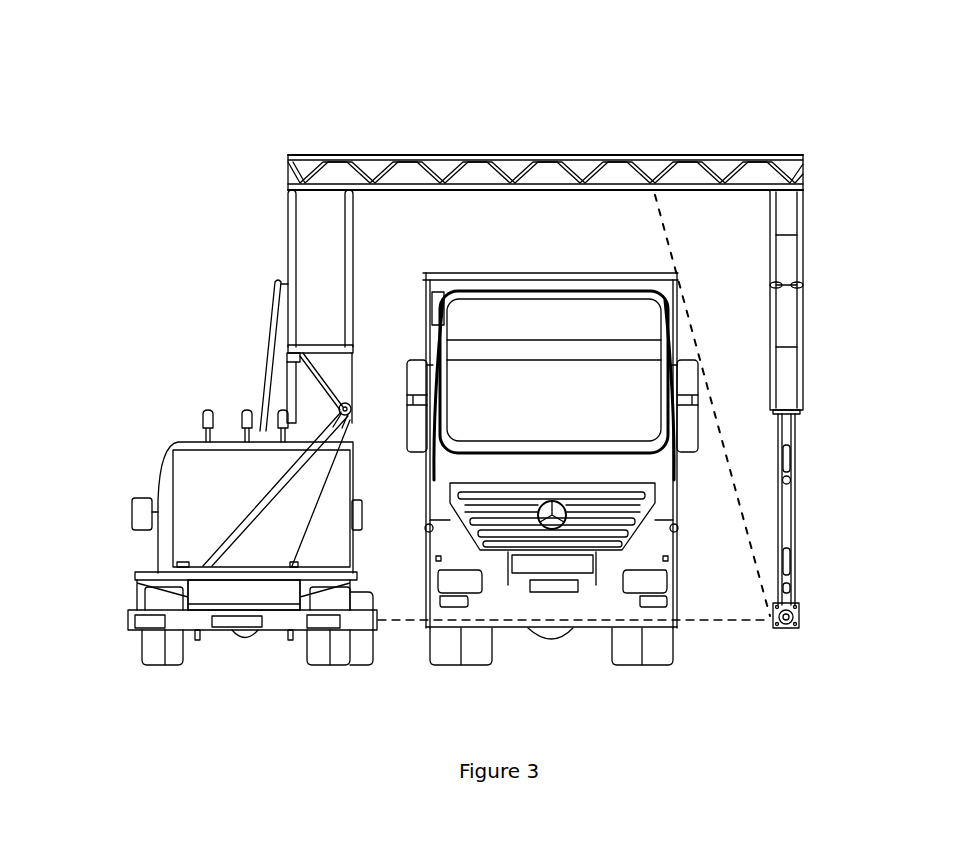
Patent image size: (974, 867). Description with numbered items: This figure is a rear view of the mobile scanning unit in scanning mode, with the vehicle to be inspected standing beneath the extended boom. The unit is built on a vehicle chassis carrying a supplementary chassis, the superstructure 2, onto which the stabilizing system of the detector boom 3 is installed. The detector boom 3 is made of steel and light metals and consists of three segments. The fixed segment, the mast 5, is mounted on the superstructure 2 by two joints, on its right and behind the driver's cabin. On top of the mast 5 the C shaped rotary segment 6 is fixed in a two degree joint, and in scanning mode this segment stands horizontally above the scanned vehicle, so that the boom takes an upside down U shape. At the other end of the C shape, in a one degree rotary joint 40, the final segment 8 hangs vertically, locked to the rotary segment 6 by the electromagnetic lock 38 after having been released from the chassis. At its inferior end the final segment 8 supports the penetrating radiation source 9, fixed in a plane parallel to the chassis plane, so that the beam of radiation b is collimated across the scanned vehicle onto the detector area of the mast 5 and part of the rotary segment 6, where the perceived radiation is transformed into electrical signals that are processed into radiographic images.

The superstructure 2 is at (215, 597).
The detector boom 3 is at (310, 404).
The mast 5 is at (337, 375).
The C shaped rotary segment 6 is at (519, 160).
The final segment 8 is at (795, 506).
The penetrating radiation source 9 is at (799, 628).
The electromagnetic lock 38 is at (866, 306).
The one degree rotary joint 40 is at (803, 410).
The beam of radiation b is at (615, 232).